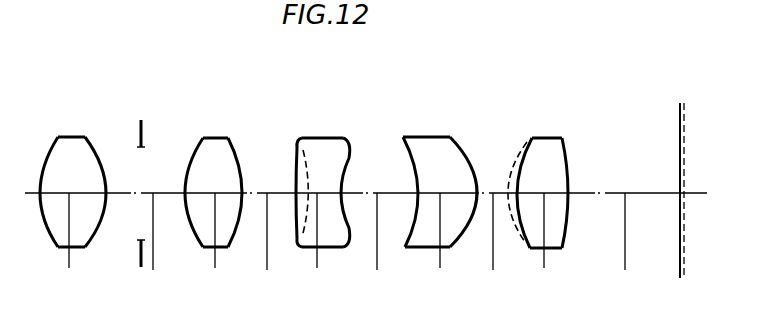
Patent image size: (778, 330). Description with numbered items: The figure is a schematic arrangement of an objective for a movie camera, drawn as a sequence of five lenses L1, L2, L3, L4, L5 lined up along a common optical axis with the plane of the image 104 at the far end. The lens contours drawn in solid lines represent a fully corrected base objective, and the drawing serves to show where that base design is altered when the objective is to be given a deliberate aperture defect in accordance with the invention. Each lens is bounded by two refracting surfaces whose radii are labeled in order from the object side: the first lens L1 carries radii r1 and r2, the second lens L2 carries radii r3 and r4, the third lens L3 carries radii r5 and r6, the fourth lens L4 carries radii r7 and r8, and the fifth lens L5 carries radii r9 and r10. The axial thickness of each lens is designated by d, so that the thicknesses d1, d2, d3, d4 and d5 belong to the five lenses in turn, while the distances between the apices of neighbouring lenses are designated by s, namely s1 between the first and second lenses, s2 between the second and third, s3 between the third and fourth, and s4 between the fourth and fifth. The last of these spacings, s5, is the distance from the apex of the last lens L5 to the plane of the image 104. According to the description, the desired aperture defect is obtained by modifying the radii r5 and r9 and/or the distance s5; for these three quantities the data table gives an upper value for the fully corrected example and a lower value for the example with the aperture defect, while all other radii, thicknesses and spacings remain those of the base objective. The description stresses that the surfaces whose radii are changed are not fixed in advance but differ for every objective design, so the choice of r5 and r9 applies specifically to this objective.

The lens L1 is at (74, 198).
The lens L2 is at (216, 198).
The lens L3 is at (317, 198).
The lens L4 is at (440, 198).
The lens L5 is at (547, 198).
The radius r1 is at (45, 227).
The radius r2 is at (97, 227).
The radius r3 is at (192, 227).
The radius r4 is at (238, 225).
The radius r5 is at (297, 229).
The radius r6 is at (346, 228).
The radius r7 is at (412, 227).
The radius r8 is at (465, 227).
The radius r9 is at (526, 232).
The radius r10 is at (565, 223).
The lens thickness d1 is at (70, 242).
The lens thickness d2 is at (216, 242).
The lens thickness d3 is at (319, 242).
The lens thickness d4 is at (441, 242).
The lens thickness d5 is at (545, 242).
The distance of apices s1 is at (154, 242).
The distance of apices s2 is at (268, 242).
The distance of apices s3 is at (378, 242).
The distance of apices s4 is at (494, 242).
The distance s5 is at (626, 242).
The plane of the image 104 is at (684, 176).